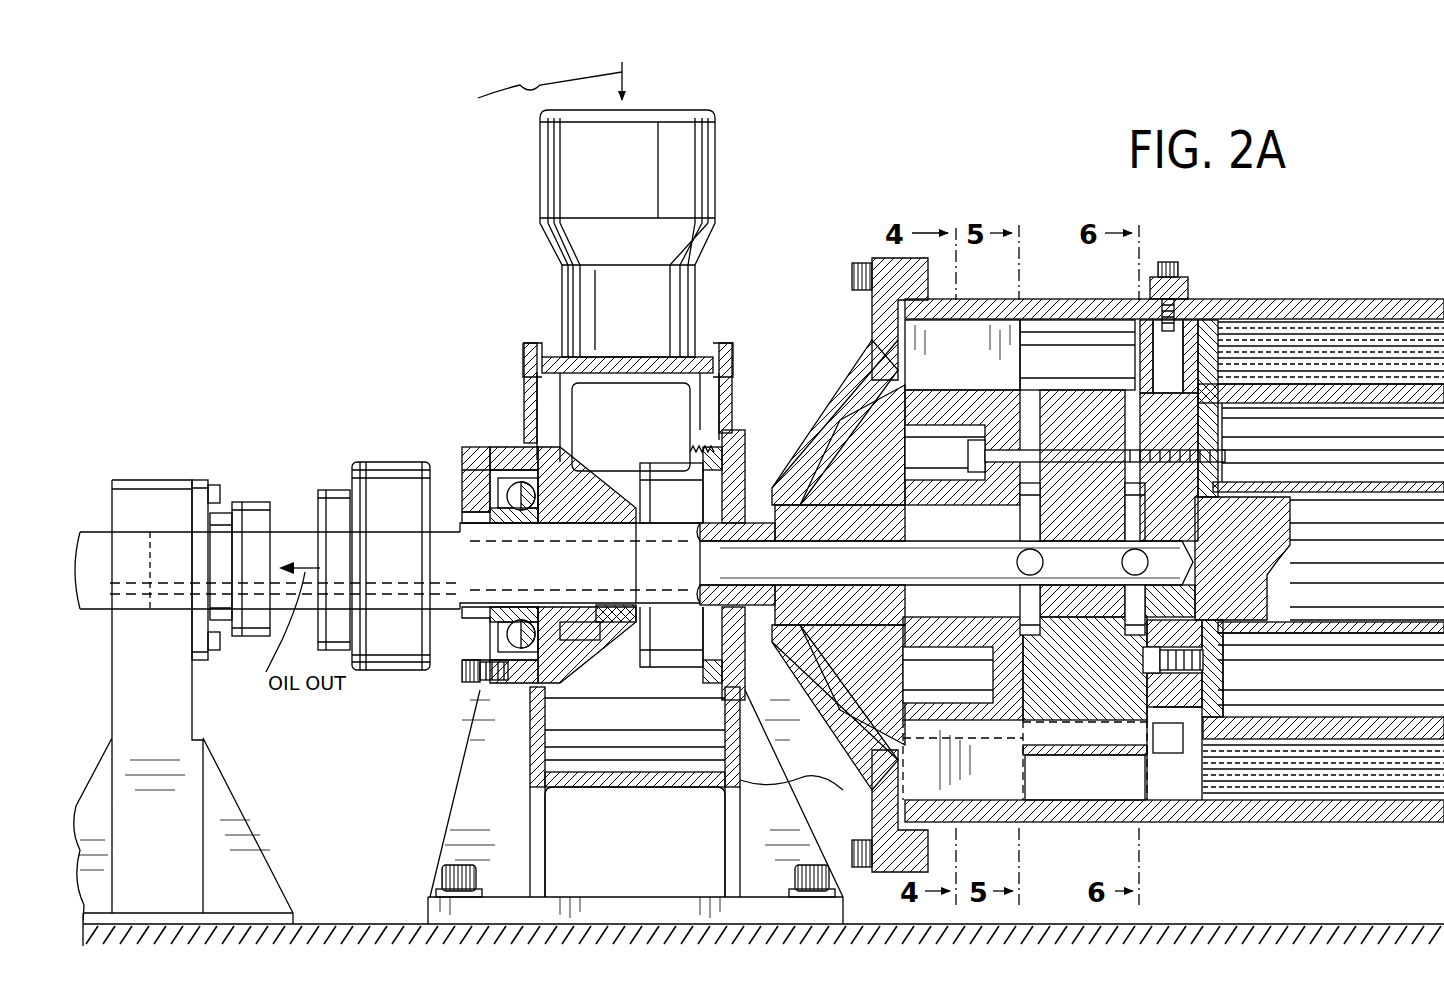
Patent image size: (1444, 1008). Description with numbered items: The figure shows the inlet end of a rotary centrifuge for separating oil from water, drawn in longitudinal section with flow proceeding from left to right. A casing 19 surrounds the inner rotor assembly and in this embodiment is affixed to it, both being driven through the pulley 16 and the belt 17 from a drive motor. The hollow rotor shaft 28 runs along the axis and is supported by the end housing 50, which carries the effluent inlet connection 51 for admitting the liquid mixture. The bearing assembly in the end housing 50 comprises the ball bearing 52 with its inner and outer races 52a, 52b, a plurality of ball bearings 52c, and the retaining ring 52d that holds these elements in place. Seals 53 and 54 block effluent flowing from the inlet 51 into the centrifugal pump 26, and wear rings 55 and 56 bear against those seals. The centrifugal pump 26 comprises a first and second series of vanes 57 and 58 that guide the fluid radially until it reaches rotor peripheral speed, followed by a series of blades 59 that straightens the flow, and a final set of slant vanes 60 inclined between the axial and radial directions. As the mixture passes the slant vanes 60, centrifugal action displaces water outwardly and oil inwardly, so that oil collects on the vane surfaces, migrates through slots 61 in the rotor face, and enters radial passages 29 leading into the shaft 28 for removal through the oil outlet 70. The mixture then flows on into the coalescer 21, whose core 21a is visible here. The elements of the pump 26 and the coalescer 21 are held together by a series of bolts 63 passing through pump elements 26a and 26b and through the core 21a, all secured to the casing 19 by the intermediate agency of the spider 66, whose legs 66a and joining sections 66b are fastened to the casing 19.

The pulley 16 is at (352, 487).
The belt 17 is at (383, 488).
The casing 19 is at (1270, 319).
The coalescer 21 is at (1350, 317).
The core of the coalescer 21a is at (1230, 480).
The centrifugal pump 26 is at (816, 705).
The pump element 26a is at (990, 672).
The pump element 26b is at (1070, 740).
The rotor shaft 28 is at (447, 585).
The radial passages 29 is at (1122, 556).
The end housing 50 is at (530, 778).
The effluent inlet connection 51 is at (555, 160).
The ball bearing 52 is at (462, 662).
The inner race 52a is at (540, 632).
The outer race 52b is at (530, 640).
The ball bearings 52c is at (496, 690).
The retaining ring 52d is at (476, 456).
The seal 53 is at (586, 648).
The seal 54 is at (655, 480).
The wear ring 55 is at (582, 630).
The wear ring 56 is at (706, 500).
The first series of vanes 57 is at (755, 472).
The second series of vanes 58 is at (820, 455).
The straightener blades 59 is at (946, 376).
The slant vanes 60 is at (1070, 335).
The slots 61 is at (1206, 662).
The bolts 63 is at (975, 458).
The spider 66 is at (1212, 640).
The legs of the spider 66a is at (1152, 360).
The joining sections 66b is at (1178, 282).
The oil outlet 70 is at (107, 530).